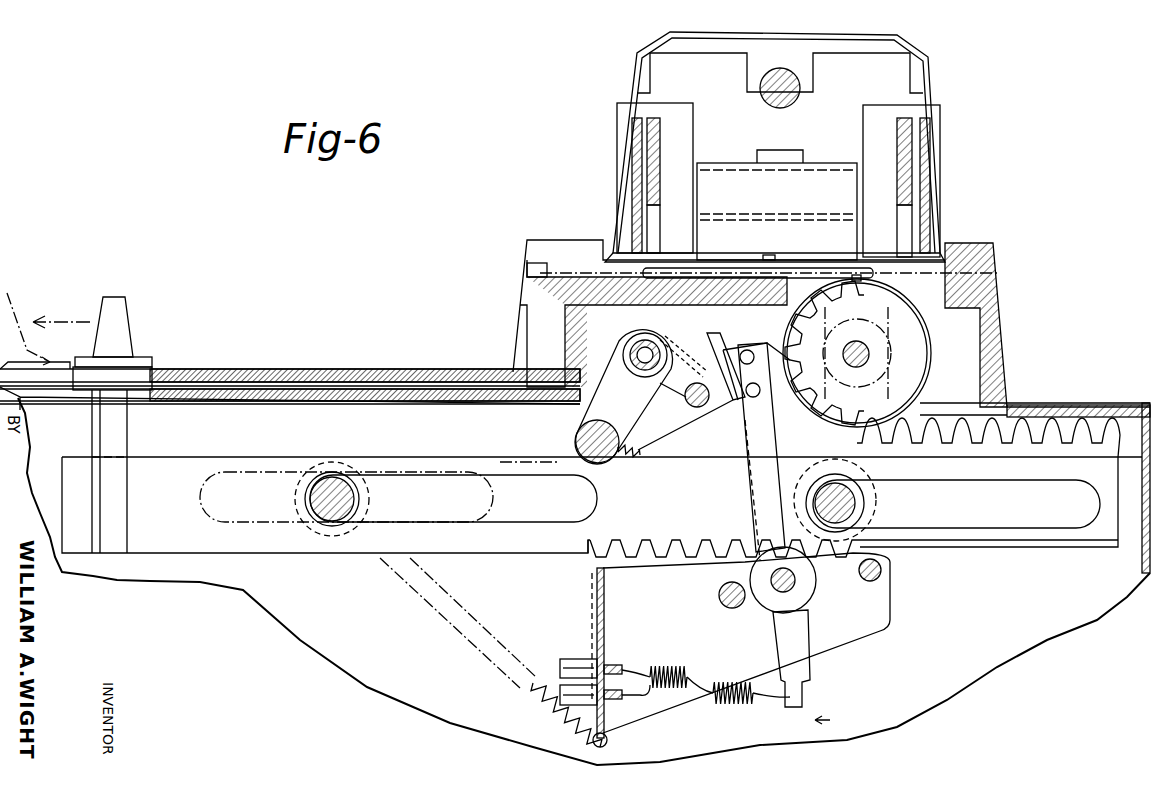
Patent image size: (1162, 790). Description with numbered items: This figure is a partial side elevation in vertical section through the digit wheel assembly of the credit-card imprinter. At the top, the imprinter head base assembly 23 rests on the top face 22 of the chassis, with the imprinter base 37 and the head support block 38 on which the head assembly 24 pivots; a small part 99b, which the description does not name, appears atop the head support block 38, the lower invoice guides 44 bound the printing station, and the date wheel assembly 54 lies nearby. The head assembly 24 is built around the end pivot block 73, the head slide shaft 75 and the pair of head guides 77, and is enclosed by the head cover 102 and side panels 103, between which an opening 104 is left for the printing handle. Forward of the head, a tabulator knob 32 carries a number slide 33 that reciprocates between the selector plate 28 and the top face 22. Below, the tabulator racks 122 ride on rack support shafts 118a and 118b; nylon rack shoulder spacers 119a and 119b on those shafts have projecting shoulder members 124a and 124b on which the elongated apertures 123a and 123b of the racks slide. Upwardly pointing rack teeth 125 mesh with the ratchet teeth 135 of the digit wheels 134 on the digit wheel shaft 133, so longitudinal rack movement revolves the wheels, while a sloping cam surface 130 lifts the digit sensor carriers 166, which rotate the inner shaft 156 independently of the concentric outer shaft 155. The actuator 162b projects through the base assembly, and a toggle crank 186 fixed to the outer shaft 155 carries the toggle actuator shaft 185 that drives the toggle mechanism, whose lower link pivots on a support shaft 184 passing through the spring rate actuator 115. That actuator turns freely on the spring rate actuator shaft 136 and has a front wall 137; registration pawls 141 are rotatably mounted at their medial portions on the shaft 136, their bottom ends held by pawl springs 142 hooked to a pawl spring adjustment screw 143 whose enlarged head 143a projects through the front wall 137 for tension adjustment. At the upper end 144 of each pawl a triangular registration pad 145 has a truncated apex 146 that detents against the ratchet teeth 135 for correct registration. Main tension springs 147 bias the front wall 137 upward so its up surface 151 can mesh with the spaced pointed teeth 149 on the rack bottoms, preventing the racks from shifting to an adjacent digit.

The top face 22 is at (216, 398).
The imprinter head base assembly 23 is at (1022, 332).
The head assembly 24 is at (957, 136).
The selector plate 28 is at (233, 370).
The tabulator knobs 32 is at (125, 308).
The number slide 33 is at (353, 373).
The imprinter base 37 is at (990, 294).
The head support block 38 is at (778, 197).
The lower invoice guides 44 is at (575, 268).
The date wheel assembly 54 is at (684, 317).
The end pivot block 73 is at (748, 63).
The head slide shaft 75 is at (800, 96).
The head guides 77 is at (660, 162).
The head tab 99b is at (800, 151).
The head cover 102 is at (905, 50).
The side panels 103 is at (633, 160).
The opening 104 is at (935, 116).
The spring rate actuator 115 is at (850, 650).
The rack support shaft 118a is at (310, 498).
The rack support shaft 118b is at (840, 487).
The rack shoulder spacers 119a is at (359, 507).
The rack shoulder spacers 119b is at (864, 513).
The tabulator racks 122 is at (262, 458).
The elongated aperture 123a is at (440, 475).
The elongated aperture 123b is at (948, 515).
The projecting shoulder member 124a is at (360, 492).
The projecting shoulder member 124b is at (858, 495).
The rack teeth 125 is at (1003, 488).
The sloping cam surface 130 is at (558, 456).
The digit wheel shaft 133 is at (871, 356).
The digit wheels 134 is at (920, 345).
The ratchet teeth 135 is at (859, 366).
The spring rate actuator shaft 136 is at (796, 587).
The front wall 137 is at (606, 626).
The registration pawls 141 is at (752, 504).
The pawl springs 142 is at (677, 669).
The pawl spring adjustment screw 143 is at (620, 667).
The enlarged head 143a is at (590, 659).
The upper end 144 is at (755, 352).
The registration pad 145 is at (712, 345).
The truncated apex 146 is at (792, 345).
The main tension springs 147 is at (545, 718).
The pointed teeth 149 is at (682, 568).
The up surface 151 is at (594, 566).
The outer shaft 155 is at (640, 348).
The inner shaft 156 is at (636, 356).
The actuator 162b is at (775, 256).
The digit sensor carriers 166 is at (643, 408).
The support shaft 184 is at (735, 608).
The toggle actuator shaft 185 is at (716, 412).
The toggle crank 186 is at (700, 352).